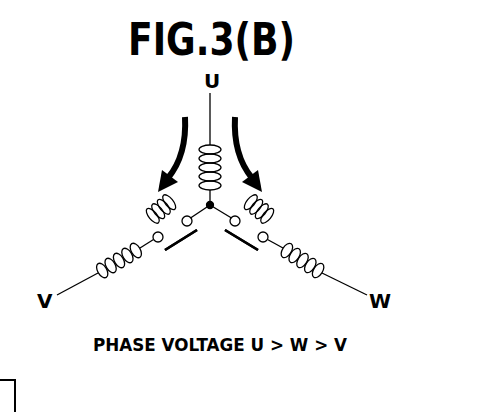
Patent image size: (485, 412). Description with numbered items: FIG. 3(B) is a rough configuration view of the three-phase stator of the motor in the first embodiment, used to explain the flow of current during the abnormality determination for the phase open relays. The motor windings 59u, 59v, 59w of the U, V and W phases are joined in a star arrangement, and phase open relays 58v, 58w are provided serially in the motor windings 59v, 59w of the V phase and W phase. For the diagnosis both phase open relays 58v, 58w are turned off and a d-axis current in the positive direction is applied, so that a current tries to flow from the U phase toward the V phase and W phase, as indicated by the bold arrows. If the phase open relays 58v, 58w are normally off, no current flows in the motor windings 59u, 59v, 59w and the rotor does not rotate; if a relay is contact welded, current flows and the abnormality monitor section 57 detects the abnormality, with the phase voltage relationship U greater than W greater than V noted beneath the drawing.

The abnormality monitor section 57 is at (141, 188).
The phase open relay 58v is at (188, 238).
The phase open relay 58w is at (234, 238).
The motor winding 59u is at (225, 158).
The motor winding 59v is at (112, 250).
The motor winding 59w is at (320, 248).